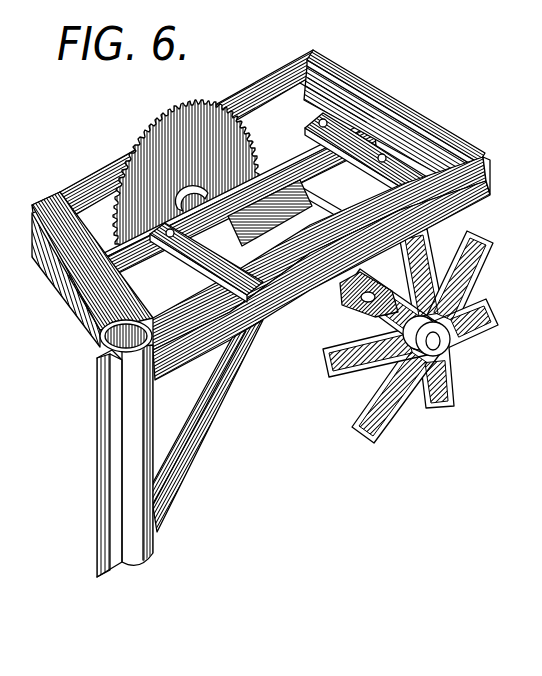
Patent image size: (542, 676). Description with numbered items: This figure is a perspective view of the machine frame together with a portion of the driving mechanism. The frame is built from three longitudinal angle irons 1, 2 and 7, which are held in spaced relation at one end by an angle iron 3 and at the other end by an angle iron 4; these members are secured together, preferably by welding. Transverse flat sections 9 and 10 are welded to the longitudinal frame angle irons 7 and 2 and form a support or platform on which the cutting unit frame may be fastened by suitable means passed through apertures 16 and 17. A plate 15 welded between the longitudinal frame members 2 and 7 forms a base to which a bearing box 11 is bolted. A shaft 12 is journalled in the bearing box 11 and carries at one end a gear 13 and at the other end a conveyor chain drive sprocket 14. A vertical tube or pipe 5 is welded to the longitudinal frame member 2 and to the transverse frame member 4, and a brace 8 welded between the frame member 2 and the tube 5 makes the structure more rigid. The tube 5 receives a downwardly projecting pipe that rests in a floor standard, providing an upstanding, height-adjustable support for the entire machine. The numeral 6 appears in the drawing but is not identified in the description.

The longitudinal angle iron 1 is at (262, 93).
The longitudinal angle iron 2 is at (450, 204).
The angle iron 3 is at (353, 85).
The angle iron 4 is at (102, 334).
The vertical tube 5 is at (145, 417).
The angle iron leg 6 is at (110, 445).
The longitudinal angle iron 7 is at (300, 160).
The brace 8 is at (193, 437).
The transverse flat section 9 is at (271, 338).
The transverse flat section 10 is at (198, 268).
The bearing box 11 is at (345, 297).
The shaft 12 is at (447, 346).
The gear 13 is at (166, 131).
The conveyor chain drive sprocket 14 is at (472, 237).
The plate 15 is at (287, 232).
The aperture 16 is at (384, 156).
The aperture 17 is at (85, 290).